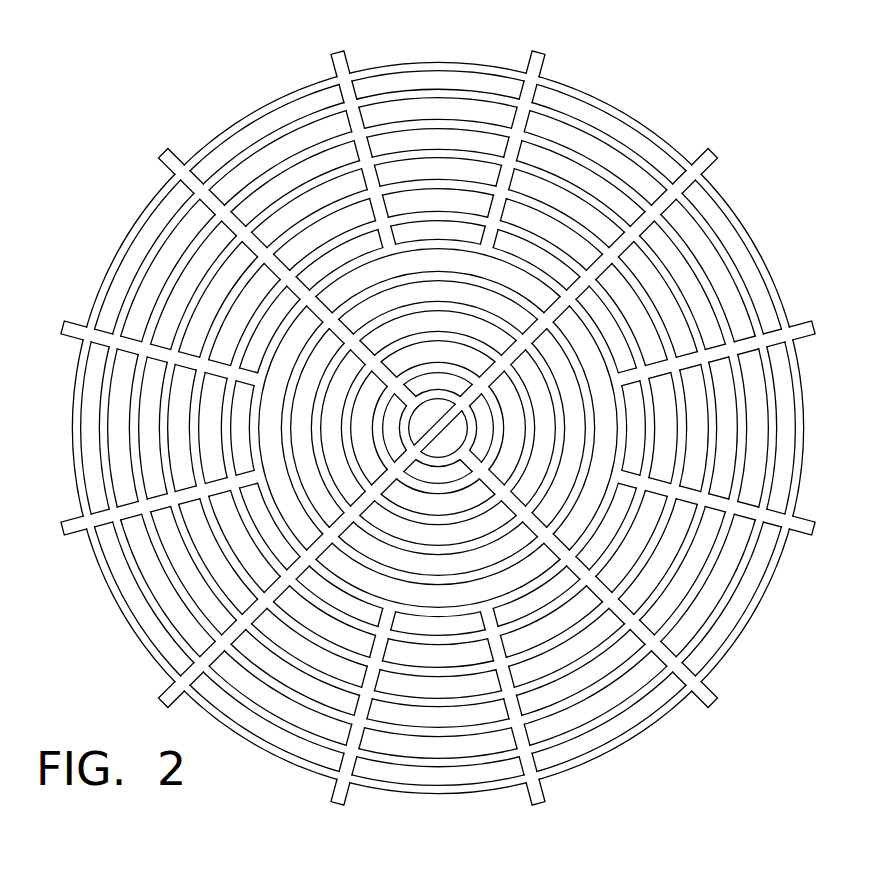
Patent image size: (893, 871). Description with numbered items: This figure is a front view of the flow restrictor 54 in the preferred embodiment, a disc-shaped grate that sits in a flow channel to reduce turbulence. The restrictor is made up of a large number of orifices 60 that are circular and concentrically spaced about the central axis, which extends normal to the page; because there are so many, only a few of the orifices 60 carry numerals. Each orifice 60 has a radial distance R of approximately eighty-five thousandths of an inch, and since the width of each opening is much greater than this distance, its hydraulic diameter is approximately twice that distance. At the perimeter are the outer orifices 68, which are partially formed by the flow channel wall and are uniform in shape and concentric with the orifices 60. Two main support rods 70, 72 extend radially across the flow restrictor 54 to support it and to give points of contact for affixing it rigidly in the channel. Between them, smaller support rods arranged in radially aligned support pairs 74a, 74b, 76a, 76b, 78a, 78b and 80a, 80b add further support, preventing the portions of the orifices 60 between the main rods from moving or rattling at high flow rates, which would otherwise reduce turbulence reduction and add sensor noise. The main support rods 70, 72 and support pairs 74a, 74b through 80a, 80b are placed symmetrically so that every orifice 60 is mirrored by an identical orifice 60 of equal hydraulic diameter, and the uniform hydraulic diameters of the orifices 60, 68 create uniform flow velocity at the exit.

The flow restrictor 54 is at (598, 48).
The orifices 60 is at (438, 412).
The outer orifices 68 is at (455, 817).
The main support rod 70 is at (712, 158).
The main support rod 72 is at (163, 160).
The smaller support rod 74a is at (336, 62).
The smaller support rod 74b is at (546, 790).
The smaller support rod 76a is at (537, 63).
The smaller support rod 76b is at (334, 793).
The smaller support rod 78a is at (798, 318).
The smaller support rod 78b is at (83, 535).
The smaller support rod 80a is at (83, 318).
The smaller support rod 80b is at (798, 535).
The radial distance R is at (437, 342).